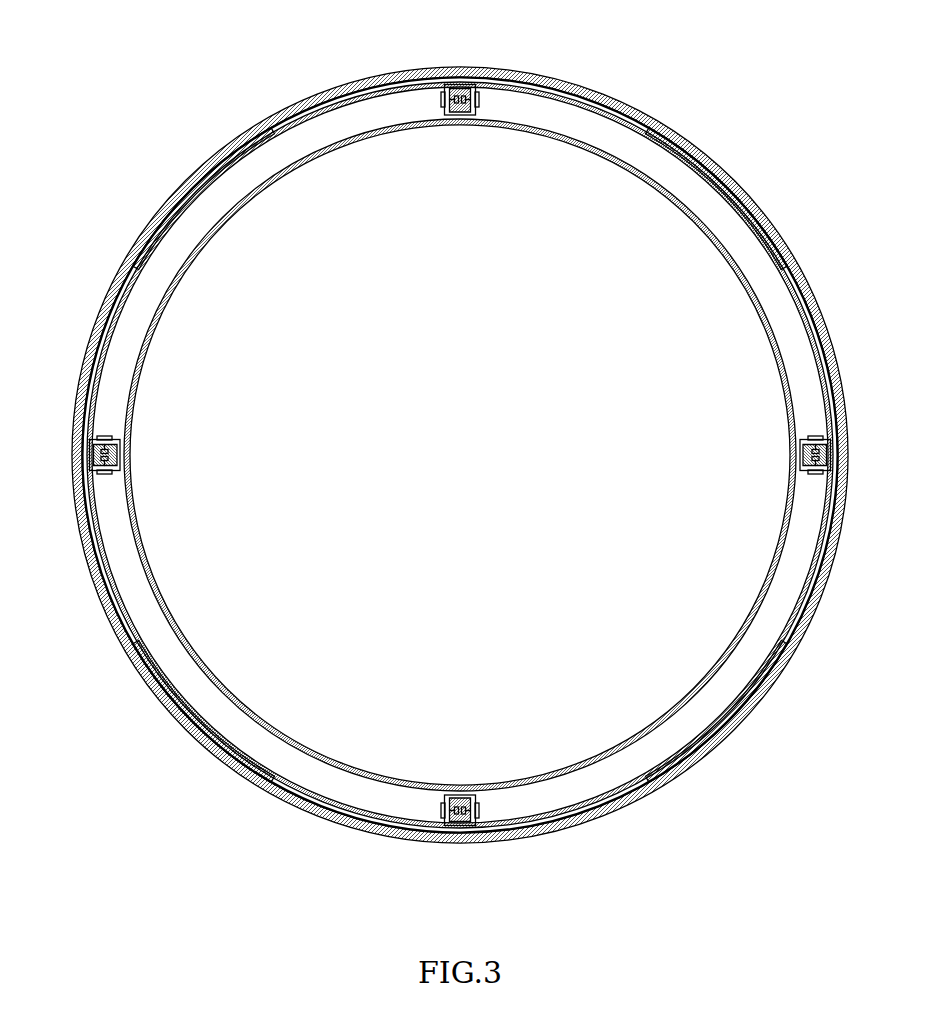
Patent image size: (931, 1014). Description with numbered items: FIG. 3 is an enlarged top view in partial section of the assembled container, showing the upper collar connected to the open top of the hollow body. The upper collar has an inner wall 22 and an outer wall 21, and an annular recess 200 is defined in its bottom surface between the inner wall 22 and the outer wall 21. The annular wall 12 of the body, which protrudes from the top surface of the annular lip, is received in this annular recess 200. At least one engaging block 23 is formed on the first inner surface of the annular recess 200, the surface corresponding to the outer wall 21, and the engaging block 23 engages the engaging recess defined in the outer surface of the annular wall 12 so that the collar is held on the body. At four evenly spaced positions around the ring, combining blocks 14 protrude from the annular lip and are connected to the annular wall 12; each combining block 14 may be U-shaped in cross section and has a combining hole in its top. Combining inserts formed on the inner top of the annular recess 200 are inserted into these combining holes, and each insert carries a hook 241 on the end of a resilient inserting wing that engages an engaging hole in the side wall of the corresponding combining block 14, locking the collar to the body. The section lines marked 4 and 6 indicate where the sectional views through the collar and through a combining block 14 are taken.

The annular wall 12 is at (93, 513).
The combining block 14 is at (139, 459).
The annular recess 200 is at (442, 458).
The outer wall 21 is at (568, 829).
The inner wall 22 is at (302, 750).
The engaging block 23 is at (147, 670).
The hook 241 is at (478, 805).
The section line 4- 4 is at (765, 170).
The section line 6- 6 is at (522, 103).